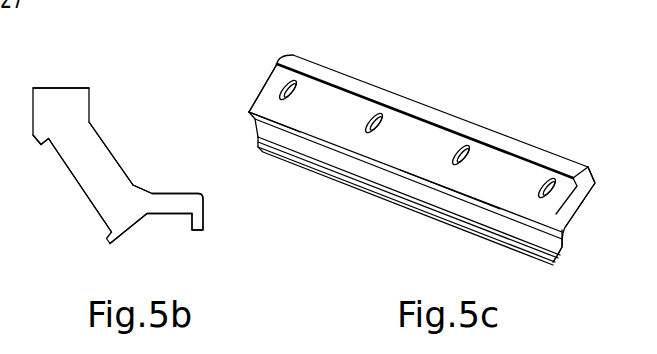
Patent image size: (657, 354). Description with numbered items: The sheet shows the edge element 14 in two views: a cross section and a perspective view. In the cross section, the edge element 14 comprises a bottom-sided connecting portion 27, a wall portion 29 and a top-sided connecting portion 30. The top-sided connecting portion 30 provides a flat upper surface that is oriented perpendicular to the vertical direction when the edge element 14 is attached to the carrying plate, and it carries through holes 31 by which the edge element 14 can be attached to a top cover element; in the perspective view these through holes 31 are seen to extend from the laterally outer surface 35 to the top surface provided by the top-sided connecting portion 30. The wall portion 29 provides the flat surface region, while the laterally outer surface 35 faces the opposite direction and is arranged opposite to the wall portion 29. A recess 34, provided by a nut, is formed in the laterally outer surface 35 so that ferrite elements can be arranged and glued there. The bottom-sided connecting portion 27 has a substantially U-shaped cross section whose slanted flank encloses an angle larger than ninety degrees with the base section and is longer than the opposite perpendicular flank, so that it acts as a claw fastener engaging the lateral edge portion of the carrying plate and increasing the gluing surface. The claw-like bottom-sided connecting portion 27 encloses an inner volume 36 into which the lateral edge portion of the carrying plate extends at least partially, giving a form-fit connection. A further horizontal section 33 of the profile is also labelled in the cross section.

In FIG. 5B, the edge element 14 is at (89, 88).
In FIG. 5C, the edge element 14 is at (368, 88).
In FIG. 5B, the bottom-sided connecting portion 27 is at (177, 195).
In FIG. 5C, the bottom-sided connecting portion 27 is at (580, 238).
In FIG. 5B, the wall portion 29 is at (102, 137).
In FIG. 5B, the top-sided connecting portion 30 is at (58, 86).
In FIG. 5C, the top-sided connecting portion 30 is at (590, 177).
In FIG. 5C, the through holes 31 is at (293, 82).
In FIG. 5B, the horizontal web section 33 is at (140, 187).
In FIG. 5B, the recess 34 is at (77, 185).
In FIG. 5C, the recess 34 is at (275, 78).
In FIG. 5B, the laterally outer surface 35 is at (57, 150).
In FIG. 5C, the laterally outer surface 35 is at (275, 102).
In FIG. 5B, the inner volume 36 is at (165, 218).
In FIG. 5C, the inner volume 36 is at (460, 208).